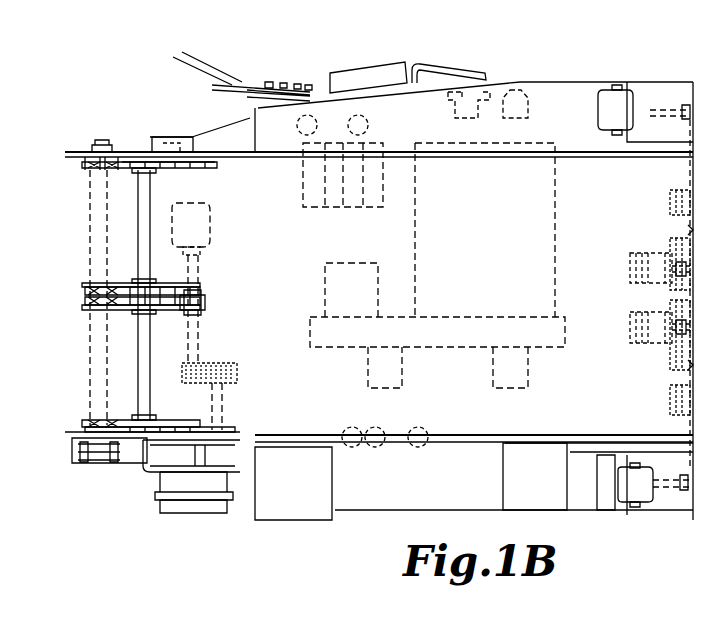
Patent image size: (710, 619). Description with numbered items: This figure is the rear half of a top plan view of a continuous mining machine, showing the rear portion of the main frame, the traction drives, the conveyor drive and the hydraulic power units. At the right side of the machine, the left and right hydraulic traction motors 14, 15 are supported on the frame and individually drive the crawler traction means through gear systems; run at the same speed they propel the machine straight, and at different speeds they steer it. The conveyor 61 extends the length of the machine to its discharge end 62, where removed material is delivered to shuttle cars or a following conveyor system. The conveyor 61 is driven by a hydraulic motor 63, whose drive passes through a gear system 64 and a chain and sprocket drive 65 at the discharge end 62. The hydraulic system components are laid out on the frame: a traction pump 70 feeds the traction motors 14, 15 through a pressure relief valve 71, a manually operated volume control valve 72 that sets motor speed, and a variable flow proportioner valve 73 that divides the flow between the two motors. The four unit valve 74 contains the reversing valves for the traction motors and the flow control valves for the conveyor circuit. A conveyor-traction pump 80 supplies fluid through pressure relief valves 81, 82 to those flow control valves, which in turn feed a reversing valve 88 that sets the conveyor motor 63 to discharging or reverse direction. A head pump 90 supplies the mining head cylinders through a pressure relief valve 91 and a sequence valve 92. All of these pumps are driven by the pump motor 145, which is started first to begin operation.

The left hydraulic traction motor 14 is at (655, 252).
The right hydraulic traction motor 15 is at (658, 340).
The conveyor 61 is at (85, 290).
The discharge end 62 is at (128, 150).
The hydraulic motor 63 is at (205, 215).
The gear system 64 is at (205, 362).
The chain and sprocket drive 65 is at (132, 458).
The traction pump 70 is at (500, 385).
The pressure relief valve 71 is at (382, 430).
The volume control valve 72 is at (520, 86).
The variable flow proportioner valve 73 is at (462, 92).
The four unit valve 74 is at (300, 190).
The conveyor-traction pump 80 is at (330, 263).
The pressure relief valve 81 is at (310, 115).
The pressure relief valve 82 is at (360, 115).
The reversing valve 88 is at (168, 150).
The head pump 90 is at (368, 380).
The pressure relief valve 91 is at (343, 430).
The sequence valve 92 is at (422, 428).
The pump motor 145 is at (491, 239).